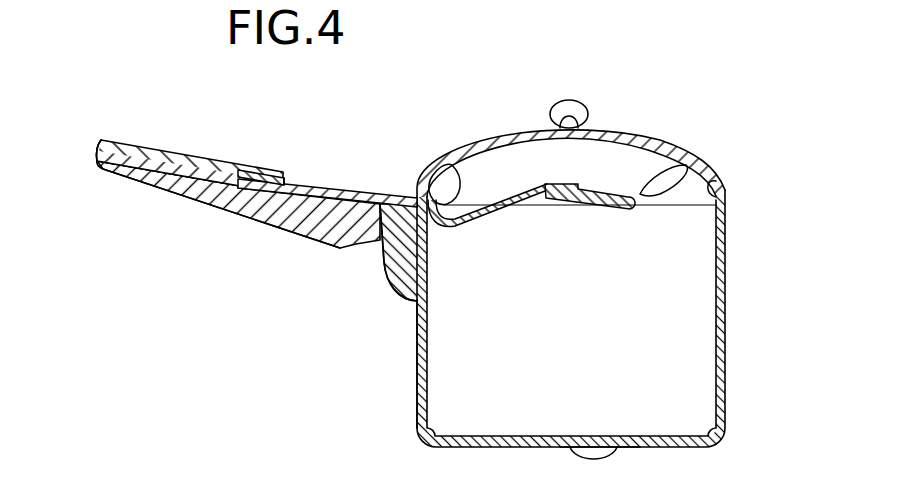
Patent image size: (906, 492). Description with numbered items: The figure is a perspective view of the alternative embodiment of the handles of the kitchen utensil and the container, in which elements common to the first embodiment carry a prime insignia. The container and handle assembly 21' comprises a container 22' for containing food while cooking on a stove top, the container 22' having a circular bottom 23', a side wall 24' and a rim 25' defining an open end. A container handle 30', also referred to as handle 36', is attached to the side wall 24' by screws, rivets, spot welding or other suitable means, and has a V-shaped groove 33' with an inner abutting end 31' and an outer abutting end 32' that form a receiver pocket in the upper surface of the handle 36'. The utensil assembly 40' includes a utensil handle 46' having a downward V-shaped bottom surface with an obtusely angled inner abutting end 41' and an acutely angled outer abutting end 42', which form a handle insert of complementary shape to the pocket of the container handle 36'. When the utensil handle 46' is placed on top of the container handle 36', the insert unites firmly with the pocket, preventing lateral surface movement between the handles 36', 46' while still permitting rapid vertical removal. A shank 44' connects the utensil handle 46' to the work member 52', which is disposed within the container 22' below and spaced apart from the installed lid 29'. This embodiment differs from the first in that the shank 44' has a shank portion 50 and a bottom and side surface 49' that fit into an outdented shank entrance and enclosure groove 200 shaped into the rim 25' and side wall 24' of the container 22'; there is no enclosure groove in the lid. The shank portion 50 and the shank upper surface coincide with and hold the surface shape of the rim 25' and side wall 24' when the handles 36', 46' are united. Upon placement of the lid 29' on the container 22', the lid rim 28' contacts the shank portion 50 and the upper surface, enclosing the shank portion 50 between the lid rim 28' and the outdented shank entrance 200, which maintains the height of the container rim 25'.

The container and handle assembly 21' is at (373, 364).
The container 22' is at (579, 259).
The circular bottom 23' is at (621, 426).
The side wall 24' is at (612, 318).
The rim 25' is at (758, 171).
The lid rim 28' is at (614, 157).
The lid 29' is at (571, 146).
The container handle 30' is at (238, 236).
The inner abutting end 31' is at (238, 223).
The outer abutting end 32' is at (234, 187).
The V-shaped groove 33' is at (168, 189).
The handle 36' is at (221, 218).
The utensil assembly 40' is at (190, 135).
The inner abutting end 41' is at (314, 130).
The outer abutting end 42' is at (118, 116).
The shank 44' is at (327, 161).
The utensil handle 46' is at (258, 136).
The bottom and side surface 49' is at (366, 267).
The shank portion 50 is at (452, 165).
The work member 52' is at (656, 169).
The outdented shank entrance and enclosure groove 200 is at (383, 265).